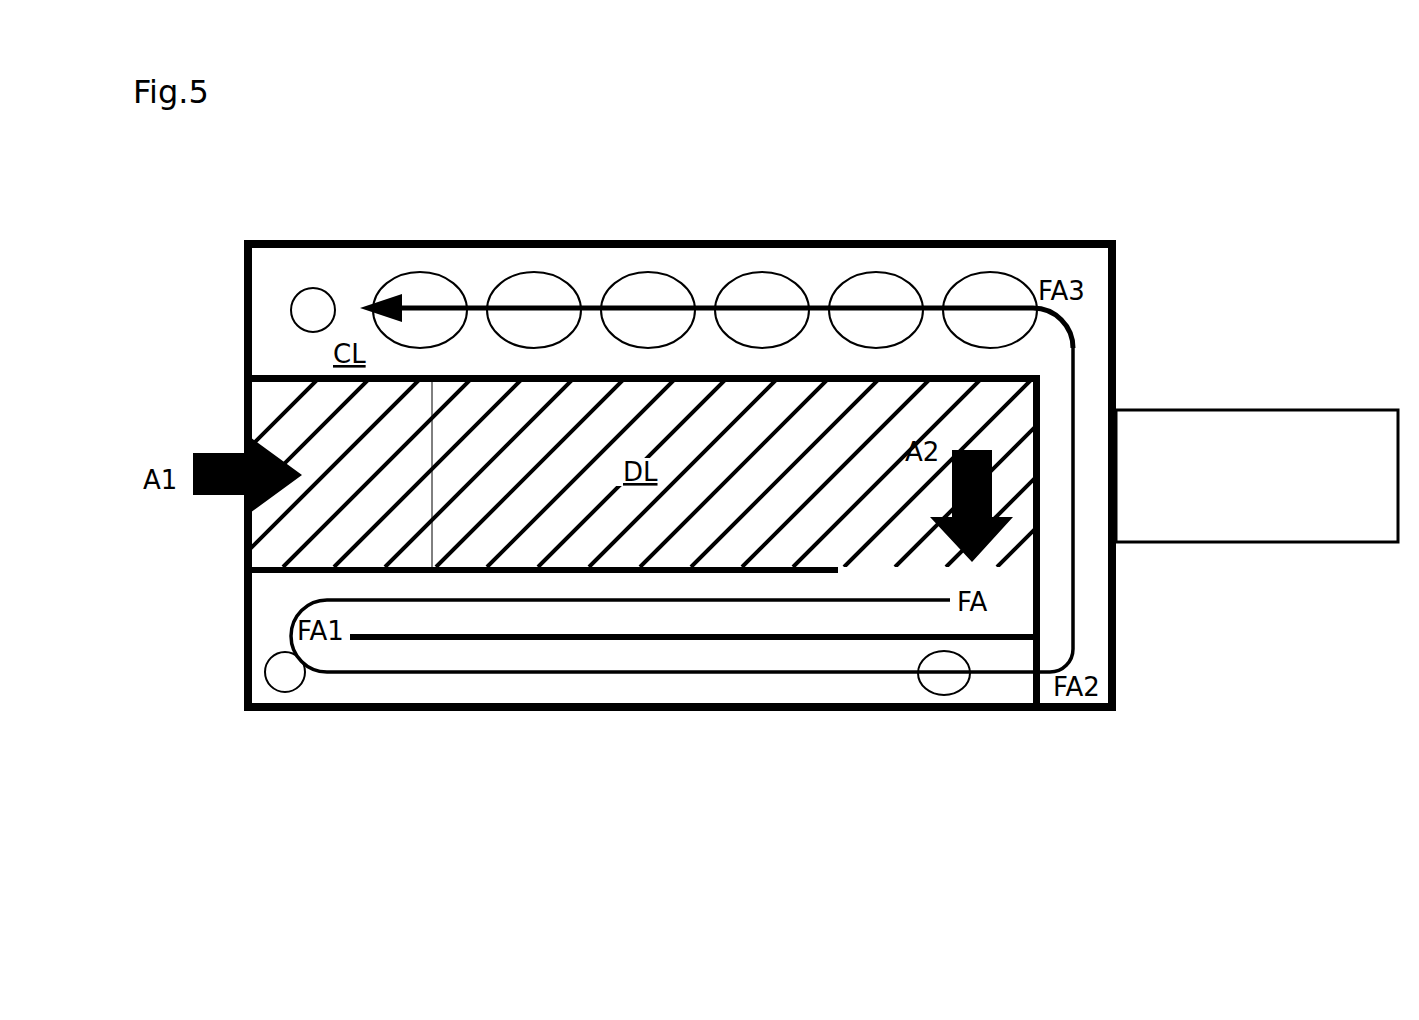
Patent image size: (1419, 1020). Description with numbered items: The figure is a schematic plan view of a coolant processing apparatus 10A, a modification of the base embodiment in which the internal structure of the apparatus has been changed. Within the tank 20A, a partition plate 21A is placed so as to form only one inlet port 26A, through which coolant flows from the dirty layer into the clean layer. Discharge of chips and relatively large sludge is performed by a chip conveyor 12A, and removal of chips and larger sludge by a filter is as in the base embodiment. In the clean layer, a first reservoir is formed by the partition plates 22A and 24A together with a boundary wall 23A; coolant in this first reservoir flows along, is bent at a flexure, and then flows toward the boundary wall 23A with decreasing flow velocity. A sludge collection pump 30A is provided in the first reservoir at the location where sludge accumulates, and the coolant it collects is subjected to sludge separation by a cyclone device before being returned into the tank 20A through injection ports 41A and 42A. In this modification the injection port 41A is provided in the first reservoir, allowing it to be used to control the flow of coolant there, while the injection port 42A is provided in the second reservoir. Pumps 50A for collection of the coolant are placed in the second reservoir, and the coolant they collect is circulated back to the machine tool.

The coolant processing apparatus 10A is at (1190, 163).
The chip conveyor 12A is at (1312, 408).
The tank 20A is at (1118, 638).
The partition plate 21A is at (645, 378).
The partition plate 22A is at (286, 572).
The boundary wall 23A is at (1040, 688).
The partition plate 24A is at (580, 660).
The inlet port 26A is at (1015, 575).
The sludge collection pump 30A is at (940, 698).
The injection port 41A is at (285, 694).
The injection port 42A is at (313, 288).
The pumps 50A is at (975, 272).